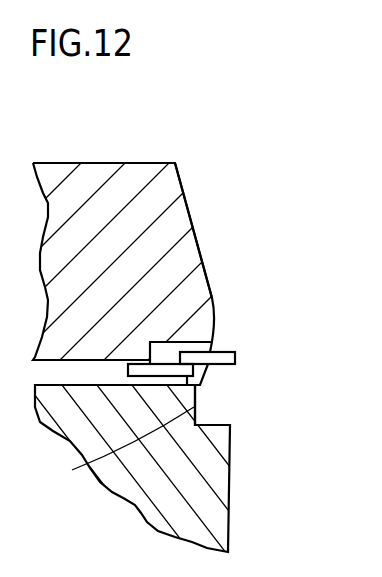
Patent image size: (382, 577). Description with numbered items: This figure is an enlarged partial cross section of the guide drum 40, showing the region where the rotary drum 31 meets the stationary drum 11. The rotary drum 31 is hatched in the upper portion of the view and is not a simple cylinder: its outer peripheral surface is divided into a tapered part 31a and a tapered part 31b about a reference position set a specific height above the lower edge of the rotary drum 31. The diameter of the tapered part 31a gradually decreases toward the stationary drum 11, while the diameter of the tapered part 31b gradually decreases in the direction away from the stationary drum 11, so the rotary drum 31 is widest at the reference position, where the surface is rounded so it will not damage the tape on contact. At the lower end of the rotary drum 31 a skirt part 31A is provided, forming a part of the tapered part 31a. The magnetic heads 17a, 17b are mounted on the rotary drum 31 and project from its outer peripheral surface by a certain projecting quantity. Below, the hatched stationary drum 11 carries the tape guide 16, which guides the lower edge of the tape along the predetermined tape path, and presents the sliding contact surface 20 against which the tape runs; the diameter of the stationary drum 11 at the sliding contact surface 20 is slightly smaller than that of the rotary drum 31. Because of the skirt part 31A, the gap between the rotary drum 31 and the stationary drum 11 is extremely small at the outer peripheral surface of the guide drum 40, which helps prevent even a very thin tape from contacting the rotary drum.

The stationary drum 11 is at (142, 498).
The tape guide 16 is at (223, 422).
The magnetic head 17a is at (233, 352).
The magnetic head 17b is at (229, 351).
The sliding contact surface 20 is at (121, 444).
The rotary drum 31 is at (60, 170).
The skirt part 31A is at (200, 378).
The tapered part 31a is at (213, 337).
The tapered part 31b is at (192, 215).
The guide drum 40 is at (132, 163).